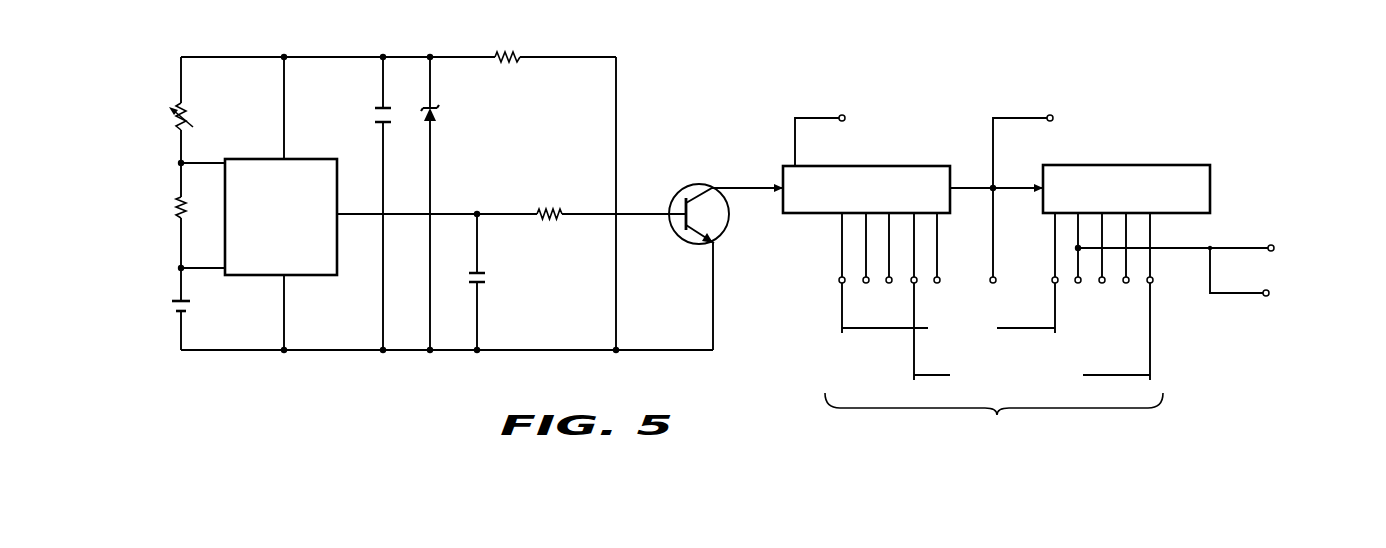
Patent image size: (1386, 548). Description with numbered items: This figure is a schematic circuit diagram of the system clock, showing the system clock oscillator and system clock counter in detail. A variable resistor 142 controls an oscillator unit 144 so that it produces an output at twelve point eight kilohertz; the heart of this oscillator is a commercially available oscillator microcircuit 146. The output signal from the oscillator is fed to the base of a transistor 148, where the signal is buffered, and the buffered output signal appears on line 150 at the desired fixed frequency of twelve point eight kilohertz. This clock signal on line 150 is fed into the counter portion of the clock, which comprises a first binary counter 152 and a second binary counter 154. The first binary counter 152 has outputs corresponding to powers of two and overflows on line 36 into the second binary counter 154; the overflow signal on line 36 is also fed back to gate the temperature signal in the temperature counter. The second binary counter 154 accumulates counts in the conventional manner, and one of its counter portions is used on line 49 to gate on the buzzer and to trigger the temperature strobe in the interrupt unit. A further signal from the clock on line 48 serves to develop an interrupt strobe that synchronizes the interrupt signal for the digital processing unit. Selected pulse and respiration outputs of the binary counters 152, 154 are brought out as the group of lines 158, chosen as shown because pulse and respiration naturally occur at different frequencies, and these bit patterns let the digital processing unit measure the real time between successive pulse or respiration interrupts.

The line 36 is at (1013, 113).
The line 48 is at (815, 113).
The line 49 is at (1218, 290).
The variable resistor 142 is at (184, 105).
The oscillator unit 144 is at (337, 45).
The oscillator microcircuit 146 is at (304, 158).
The transistor 148 is at (697, 184).
The line 150 is at (754, 190).
The first binary counter 152 is at (846, 165).
The second binary counter 154 is at (1098, 165).
The lines 158 is at (997, 414).